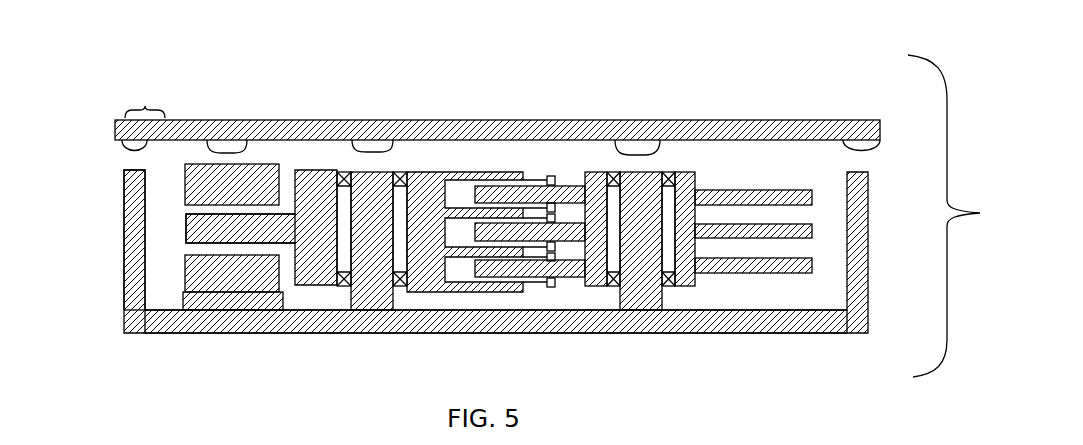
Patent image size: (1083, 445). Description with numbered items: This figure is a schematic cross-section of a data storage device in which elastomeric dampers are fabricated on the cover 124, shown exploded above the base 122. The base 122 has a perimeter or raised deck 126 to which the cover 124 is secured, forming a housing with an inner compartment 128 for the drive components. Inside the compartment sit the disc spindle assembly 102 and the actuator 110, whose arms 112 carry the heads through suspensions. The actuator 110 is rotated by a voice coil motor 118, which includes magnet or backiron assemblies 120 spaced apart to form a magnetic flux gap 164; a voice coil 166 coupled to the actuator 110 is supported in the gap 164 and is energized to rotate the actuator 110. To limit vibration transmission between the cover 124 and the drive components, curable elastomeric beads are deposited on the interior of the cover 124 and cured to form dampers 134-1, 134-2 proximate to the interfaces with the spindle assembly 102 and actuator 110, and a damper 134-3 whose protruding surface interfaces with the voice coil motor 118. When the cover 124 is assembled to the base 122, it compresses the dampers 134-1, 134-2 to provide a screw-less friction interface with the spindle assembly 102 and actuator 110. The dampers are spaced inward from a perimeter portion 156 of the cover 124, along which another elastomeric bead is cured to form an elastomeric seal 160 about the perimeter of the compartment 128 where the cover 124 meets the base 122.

The disc spindle assembly 102 is at (610, 164).
The actuator 110 is at (434, 166).
The arms 112 is at (508, 243).
The voice coil motor 118 is at (259, 161).
The magnet assemblies 120 is at (219, 193).
The base 122 is at (862, 265).
The cover 124 is at (748, 120).
The raised deck 126 is at (135, 170).
The inner compartment 128 is at (784, 286).
The elastomeric damper 134-1 is at (645, 152).
The elastomeric damper 134-2 is at (392, 150).
The elastomeric damper 134-3 is at (240, 150).
The perimeter portion 156 is at (147, 100).
The elastomeric seal 160 is at (167, 138).
The magnetic flux gap 164 is at (238, 243).
The voice coil 166 is at (273, 223).